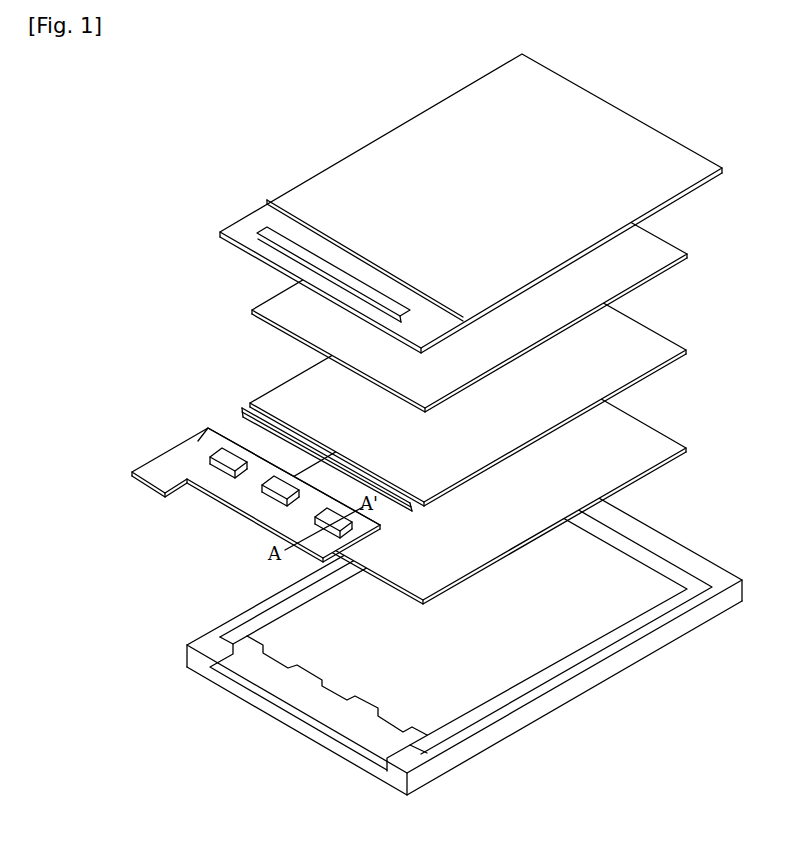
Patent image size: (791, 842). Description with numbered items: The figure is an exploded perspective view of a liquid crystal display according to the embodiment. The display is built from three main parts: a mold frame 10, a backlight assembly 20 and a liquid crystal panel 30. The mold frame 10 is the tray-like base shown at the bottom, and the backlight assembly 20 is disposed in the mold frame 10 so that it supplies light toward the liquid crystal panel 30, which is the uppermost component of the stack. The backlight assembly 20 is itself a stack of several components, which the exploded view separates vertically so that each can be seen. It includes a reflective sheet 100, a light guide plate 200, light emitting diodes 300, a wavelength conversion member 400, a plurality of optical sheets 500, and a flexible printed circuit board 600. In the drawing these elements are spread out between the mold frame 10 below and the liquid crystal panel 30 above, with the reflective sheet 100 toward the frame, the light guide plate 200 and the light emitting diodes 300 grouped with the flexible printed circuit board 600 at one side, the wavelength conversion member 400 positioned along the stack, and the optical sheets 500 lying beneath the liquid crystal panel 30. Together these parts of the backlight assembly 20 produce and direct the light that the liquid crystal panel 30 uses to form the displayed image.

The mold frame 10 is at (205, 627).
The backlight assembly 20 is at (73, 362).
The liquid crystal panel 30 is at (300, 197).
The reflective sheet 100 is at (408, 573).
The light guide plate 200 is at (155, 461).
The light emitting diodes 300 is at (221, 460).
The wavelength conversion member 400 is at (283, 408).
The optical sheets 500 is at (315, 329).
The flexible printed circuit board 600 is at (198, 441).